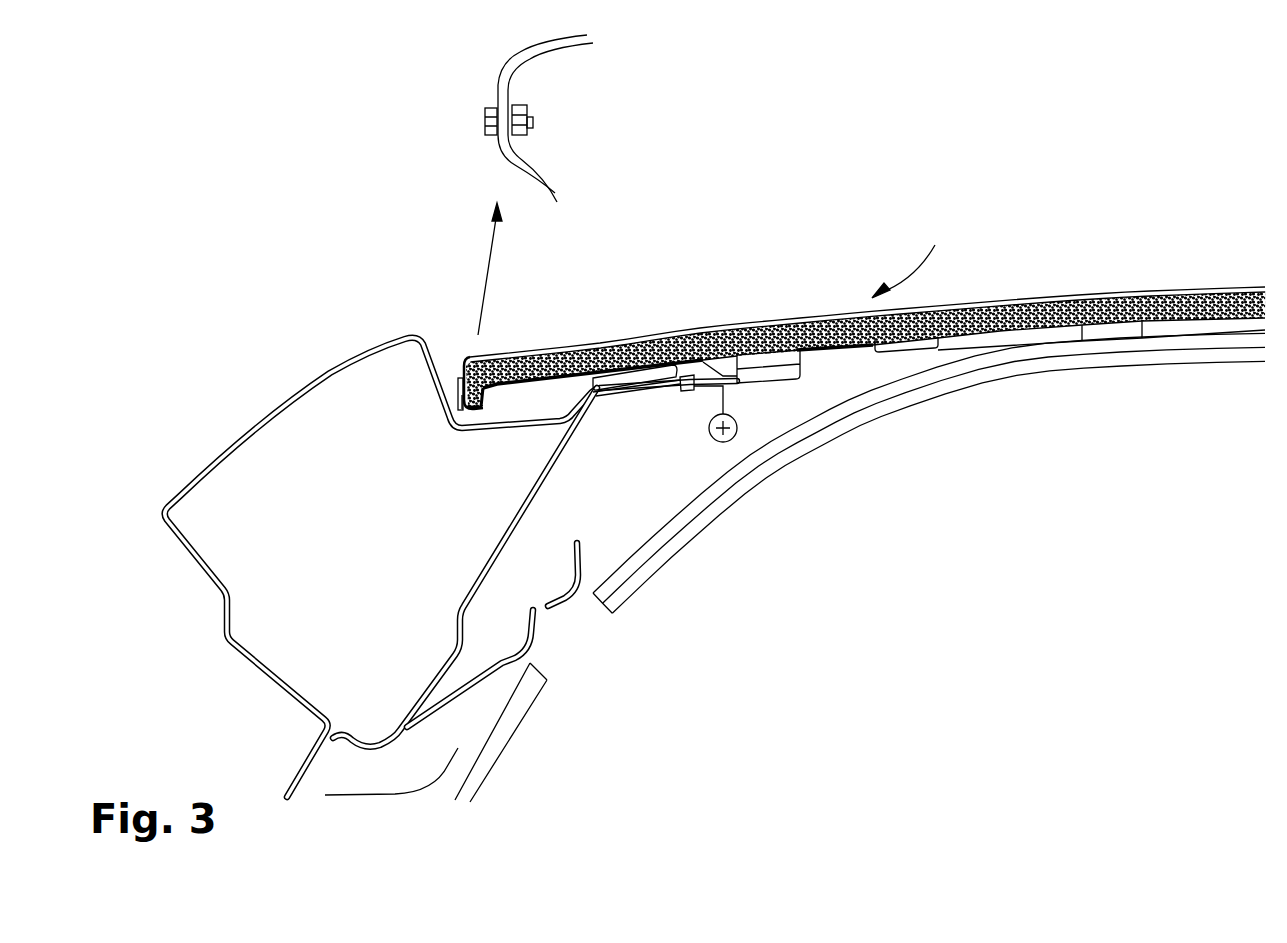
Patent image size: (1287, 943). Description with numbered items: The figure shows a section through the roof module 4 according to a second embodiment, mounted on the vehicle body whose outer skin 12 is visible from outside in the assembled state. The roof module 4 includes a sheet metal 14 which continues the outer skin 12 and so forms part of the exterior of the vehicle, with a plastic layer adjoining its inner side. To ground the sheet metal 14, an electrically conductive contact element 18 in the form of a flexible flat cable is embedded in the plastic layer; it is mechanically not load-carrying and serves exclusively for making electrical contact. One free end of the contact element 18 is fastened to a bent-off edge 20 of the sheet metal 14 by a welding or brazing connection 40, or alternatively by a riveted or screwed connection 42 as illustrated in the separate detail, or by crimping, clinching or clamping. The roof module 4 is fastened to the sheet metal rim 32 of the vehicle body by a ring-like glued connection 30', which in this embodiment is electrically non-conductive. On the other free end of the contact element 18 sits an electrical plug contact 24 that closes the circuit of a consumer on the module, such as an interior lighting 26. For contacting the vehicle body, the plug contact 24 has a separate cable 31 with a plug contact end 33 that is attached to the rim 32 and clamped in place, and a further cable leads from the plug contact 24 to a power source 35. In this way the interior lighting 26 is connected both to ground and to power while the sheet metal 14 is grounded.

The roof module 4 is at (904, 257).
The outer skin 12 is at (272, 410).
The sheet metal 14 is at (573, 347).
The electrically conductive contact element 18 is at (507, 392).
The bent-off edge 20 is at (463, 395).
The electrical plug contact 24 is at (773, 385).
The interior lighting 26 is at (907, 347).
The glued connection 30' is at (635, 331).
The separate cable 31 is at (705, 390).
The sheet metal rim 32 is at (637, 390).
The plug contact end 33 is at (687, 390).
The power source 35 is at (732, 438).
The welding or brazing connection 40 is at (465, 377).
The riveted or screwed connection 42 is at (488, 123).